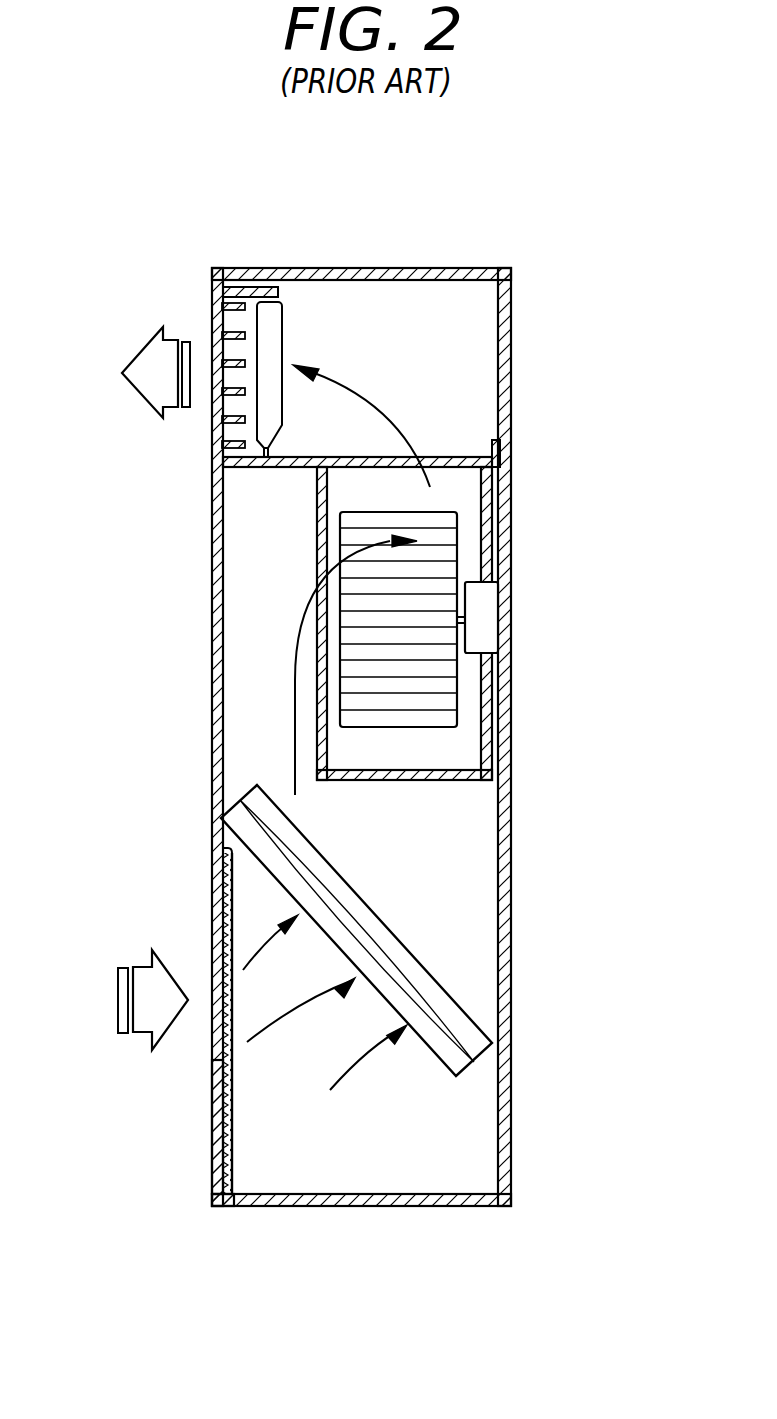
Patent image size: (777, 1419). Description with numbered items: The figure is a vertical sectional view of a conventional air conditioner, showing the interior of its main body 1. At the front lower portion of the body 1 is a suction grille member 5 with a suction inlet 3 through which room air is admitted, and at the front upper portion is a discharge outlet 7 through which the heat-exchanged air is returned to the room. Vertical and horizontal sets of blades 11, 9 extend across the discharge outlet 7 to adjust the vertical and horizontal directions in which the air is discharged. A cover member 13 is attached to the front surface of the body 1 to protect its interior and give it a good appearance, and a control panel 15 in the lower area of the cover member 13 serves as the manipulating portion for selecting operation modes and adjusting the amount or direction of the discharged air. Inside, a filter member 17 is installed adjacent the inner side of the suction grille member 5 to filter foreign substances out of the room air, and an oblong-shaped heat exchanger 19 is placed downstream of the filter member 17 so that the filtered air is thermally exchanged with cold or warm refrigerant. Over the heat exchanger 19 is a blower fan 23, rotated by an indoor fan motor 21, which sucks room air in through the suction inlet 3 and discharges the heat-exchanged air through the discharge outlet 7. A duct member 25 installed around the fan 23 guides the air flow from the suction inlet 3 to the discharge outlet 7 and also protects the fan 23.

The main body 1 is at (497, 873).
The suction inlet 3 is at (210, 1107).
The suction grille member 5 is at (210, 1070).
The discharge outlet 7 is at (200, 300).
The horizontal blades 9 is at (213, 447).
The vertical blades 11 is at (272, 335).
The cover member 13 is at (213, 648).
The control panel 15 is at (217, 823).
The filter member 17 is at (232, 1150).
The heat exchanger 19 is at (433, 993).
The indoor fan motor 21 is at (488, 627).
The blower fan 23 is at (423, 540).
The duct member 25 is at (433, 780).